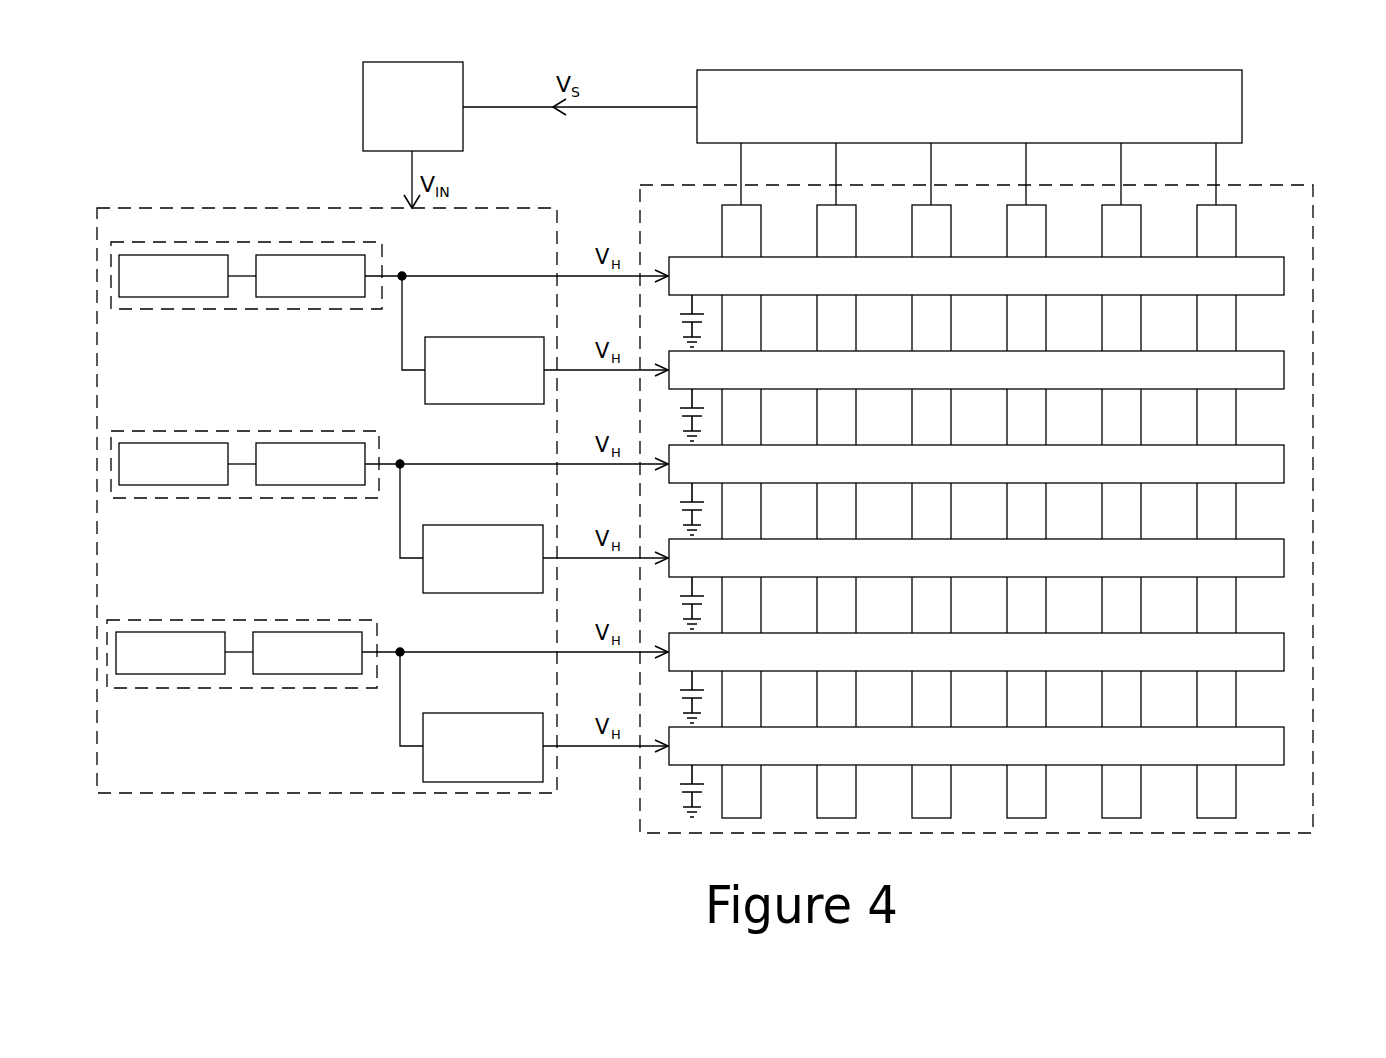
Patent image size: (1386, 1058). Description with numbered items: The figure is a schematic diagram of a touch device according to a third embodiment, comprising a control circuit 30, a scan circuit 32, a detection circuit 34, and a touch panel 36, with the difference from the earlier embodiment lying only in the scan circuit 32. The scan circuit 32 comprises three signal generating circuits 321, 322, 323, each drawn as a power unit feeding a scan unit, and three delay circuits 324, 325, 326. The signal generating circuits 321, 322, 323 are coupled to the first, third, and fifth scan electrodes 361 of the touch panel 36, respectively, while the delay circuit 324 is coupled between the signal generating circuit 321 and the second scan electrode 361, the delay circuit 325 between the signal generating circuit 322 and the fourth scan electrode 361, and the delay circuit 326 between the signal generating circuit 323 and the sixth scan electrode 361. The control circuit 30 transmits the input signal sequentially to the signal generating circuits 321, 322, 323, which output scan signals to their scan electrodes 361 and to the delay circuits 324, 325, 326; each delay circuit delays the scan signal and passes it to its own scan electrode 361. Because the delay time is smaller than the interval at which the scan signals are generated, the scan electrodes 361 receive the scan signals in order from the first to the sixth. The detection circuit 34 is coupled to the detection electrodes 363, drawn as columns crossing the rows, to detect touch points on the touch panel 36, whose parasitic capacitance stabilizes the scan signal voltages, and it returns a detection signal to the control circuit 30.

The control circuit 30 is at (440, 62).
The scan circuit 32 is at (530, 208).
The signal generating circuit 321 is at (198, 242).
The signal generating circuit 322 is at (196, 431).
The signal generating circuit 323 is at (194, 620).
The delay circuit 324 is at (485, 337).
The delay circuit 325 is at (485, 525).
The delay circuit 326 is at (485, 713).
The detection circuit 34 is at (1242, 105).
The touch panel 36 is at (1272, 185).
The scan electrode 361 is at (1285, 277).
The detection electrode 363 is at (1141, 243).